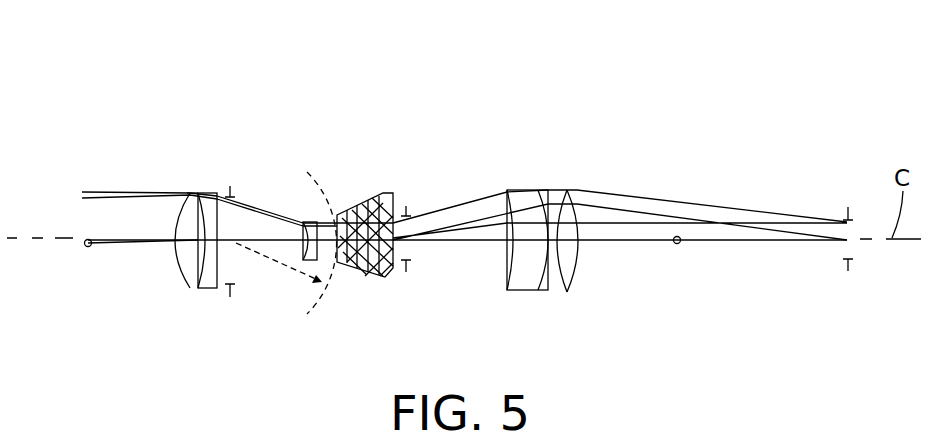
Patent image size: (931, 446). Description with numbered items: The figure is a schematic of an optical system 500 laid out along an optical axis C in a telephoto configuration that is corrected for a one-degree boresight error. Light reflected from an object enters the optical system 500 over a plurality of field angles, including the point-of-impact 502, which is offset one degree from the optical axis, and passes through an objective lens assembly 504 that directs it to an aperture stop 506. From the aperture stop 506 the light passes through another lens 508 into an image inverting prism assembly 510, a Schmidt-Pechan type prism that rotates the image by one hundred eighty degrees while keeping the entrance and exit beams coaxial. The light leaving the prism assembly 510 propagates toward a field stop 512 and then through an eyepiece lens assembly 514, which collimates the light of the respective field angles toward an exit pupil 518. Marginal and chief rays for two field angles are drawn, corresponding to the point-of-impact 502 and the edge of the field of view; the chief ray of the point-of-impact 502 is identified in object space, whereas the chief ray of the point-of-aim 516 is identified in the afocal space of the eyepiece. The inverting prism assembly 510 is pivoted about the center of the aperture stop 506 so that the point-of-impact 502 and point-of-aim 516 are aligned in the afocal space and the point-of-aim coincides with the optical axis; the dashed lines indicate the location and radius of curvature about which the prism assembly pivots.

The optical system 500 is at (524, 94).
The point-of-impact 502 is at (88, 247).
The objective lens assembly 504 is at (190, 288).
The aperture stop 506 is at (240, 200).
The lens 508 is at (305, 221).
The image inverting prism assembly 510 is at (384, 192).
The field stop 512 is at (418, 262).
The eyepiece lens assembly 514 is at (505, 192).
The point-of-aim 516 is at (677, 245).
The exit pupil 518 is at (840, 216).